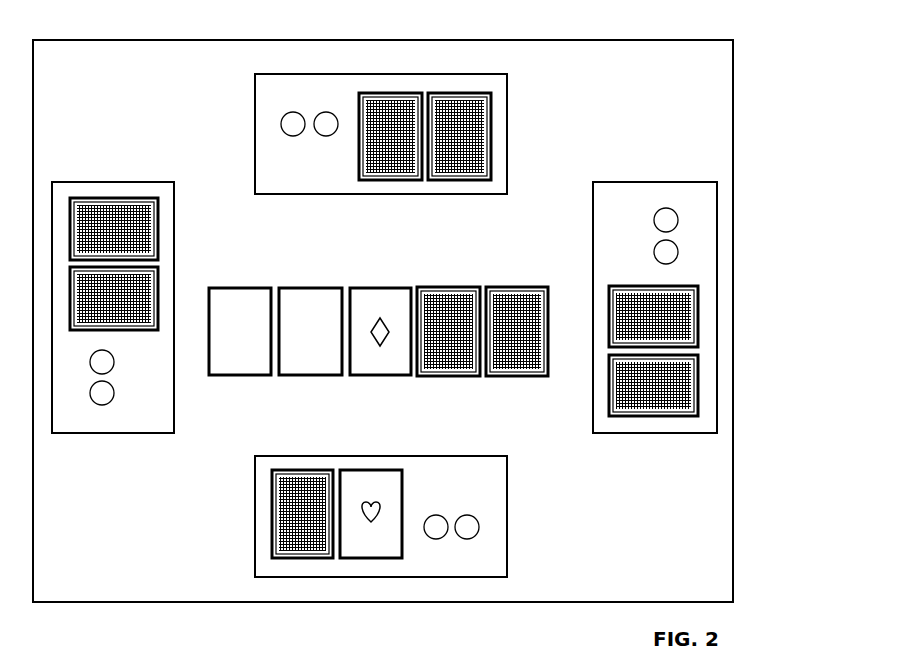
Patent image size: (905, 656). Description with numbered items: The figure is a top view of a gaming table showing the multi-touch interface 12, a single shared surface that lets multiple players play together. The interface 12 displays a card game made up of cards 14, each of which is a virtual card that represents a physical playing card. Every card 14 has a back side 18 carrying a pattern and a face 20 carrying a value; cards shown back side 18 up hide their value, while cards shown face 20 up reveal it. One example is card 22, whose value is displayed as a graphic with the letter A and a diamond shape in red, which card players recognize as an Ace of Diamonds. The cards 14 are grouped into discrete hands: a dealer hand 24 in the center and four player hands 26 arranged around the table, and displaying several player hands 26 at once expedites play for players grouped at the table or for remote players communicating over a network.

The multi-touch interface 12 is at (604, 26).
The cards 14 is at (316, 297).
The back side 18 is at (520, 360).
The face 20 is at (303, 369).
The card 22 is at (378, 369).
The dealer hand 24 is at (301, 278).
The player hands 26 is at (519, 118).